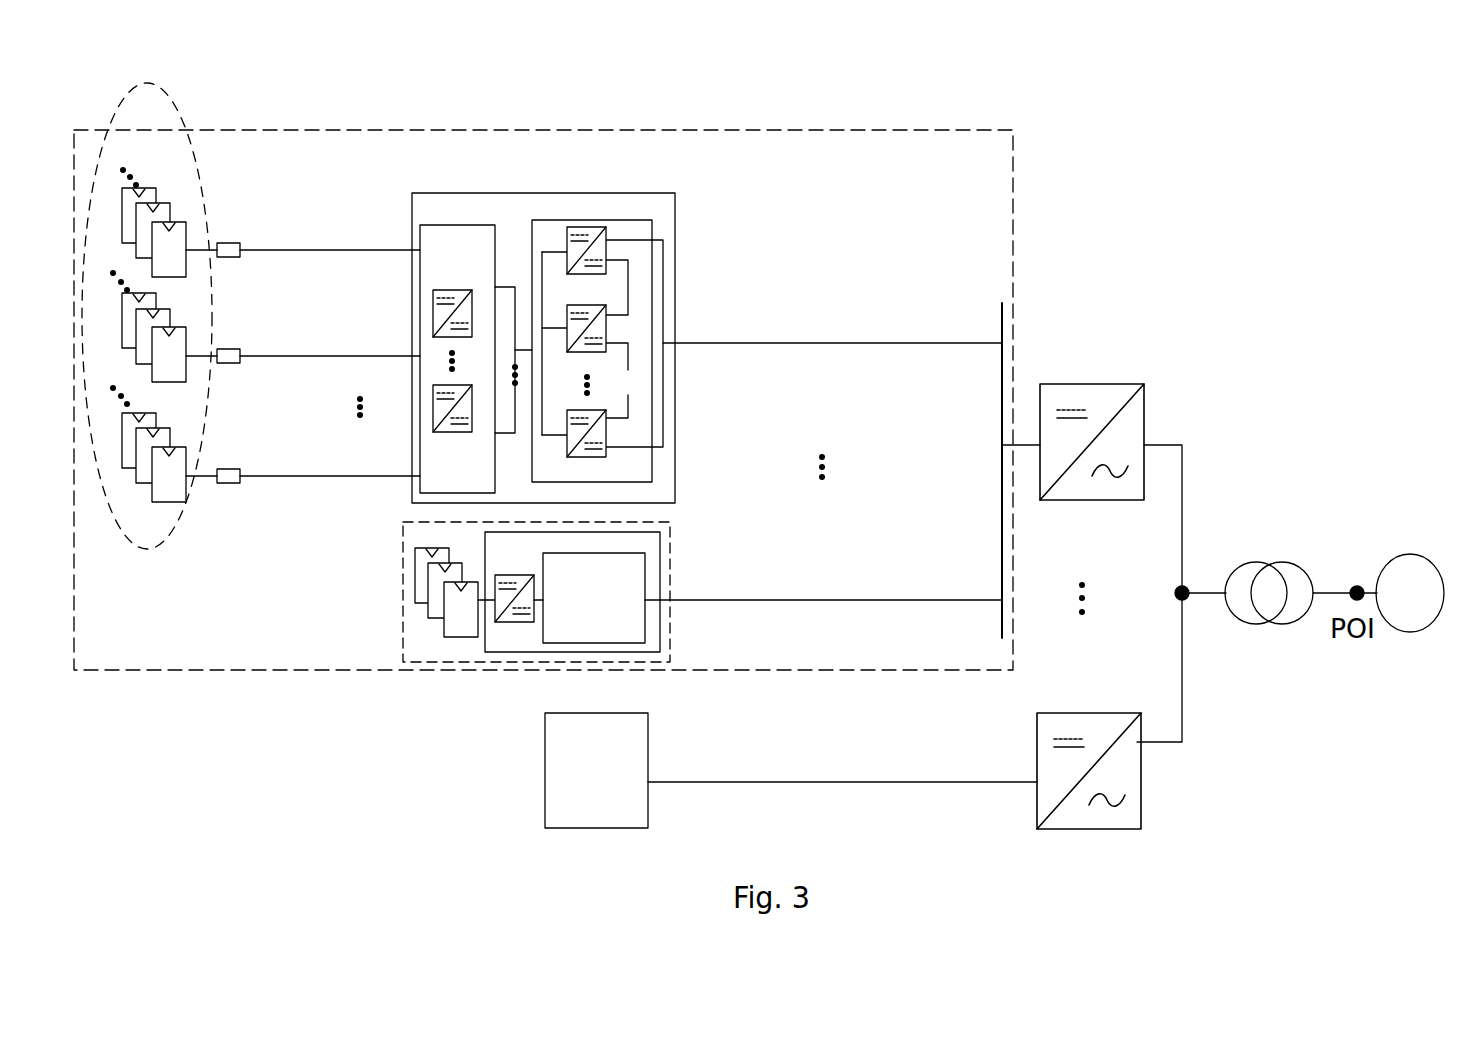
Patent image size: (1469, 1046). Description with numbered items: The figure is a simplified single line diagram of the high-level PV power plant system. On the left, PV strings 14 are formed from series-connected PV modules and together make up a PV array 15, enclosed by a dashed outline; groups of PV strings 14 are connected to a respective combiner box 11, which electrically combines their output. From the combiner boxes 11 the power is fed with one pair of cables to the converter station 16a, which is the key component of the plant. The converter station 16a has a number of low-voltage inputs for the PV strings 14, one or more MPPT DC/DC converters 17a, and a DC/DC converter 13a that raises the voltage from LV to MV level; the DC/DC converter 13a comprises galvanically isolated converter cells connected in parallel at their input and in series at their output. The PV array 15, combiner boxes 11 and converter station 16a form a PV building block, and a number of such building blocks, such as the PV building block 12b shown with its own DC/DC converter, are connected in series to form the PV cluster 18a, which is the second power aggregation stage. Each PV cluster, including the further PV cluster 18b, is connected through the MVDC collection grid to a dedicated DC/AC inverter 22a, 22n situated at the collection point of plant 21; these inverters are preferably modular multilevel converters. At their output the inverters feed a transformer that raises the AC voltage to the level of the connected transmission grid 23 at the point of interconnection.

The combiner box 11 is at (235, 484).
The PV building block 12b is at (670, 565).
The DC/DC converter 13a is at (652, 402).
The PV string 14 is at (128, 467).
The PV array 15 is at (169, 315).
The converter station 16a is at (675, 258).
The MPPT DC/DC converter 17a is at (433, 318).
The PV cluster 18a is at (747, 138).
The PV cluster 18b is at (545, 782).
The collection point of plant 21 is at (1187, 600).
The DC/AC inverter 22a is at (1105, 398).
The DC/AC inverter 22n is at (1120, 738).
The transmission grid 23 is at (1412, 560).